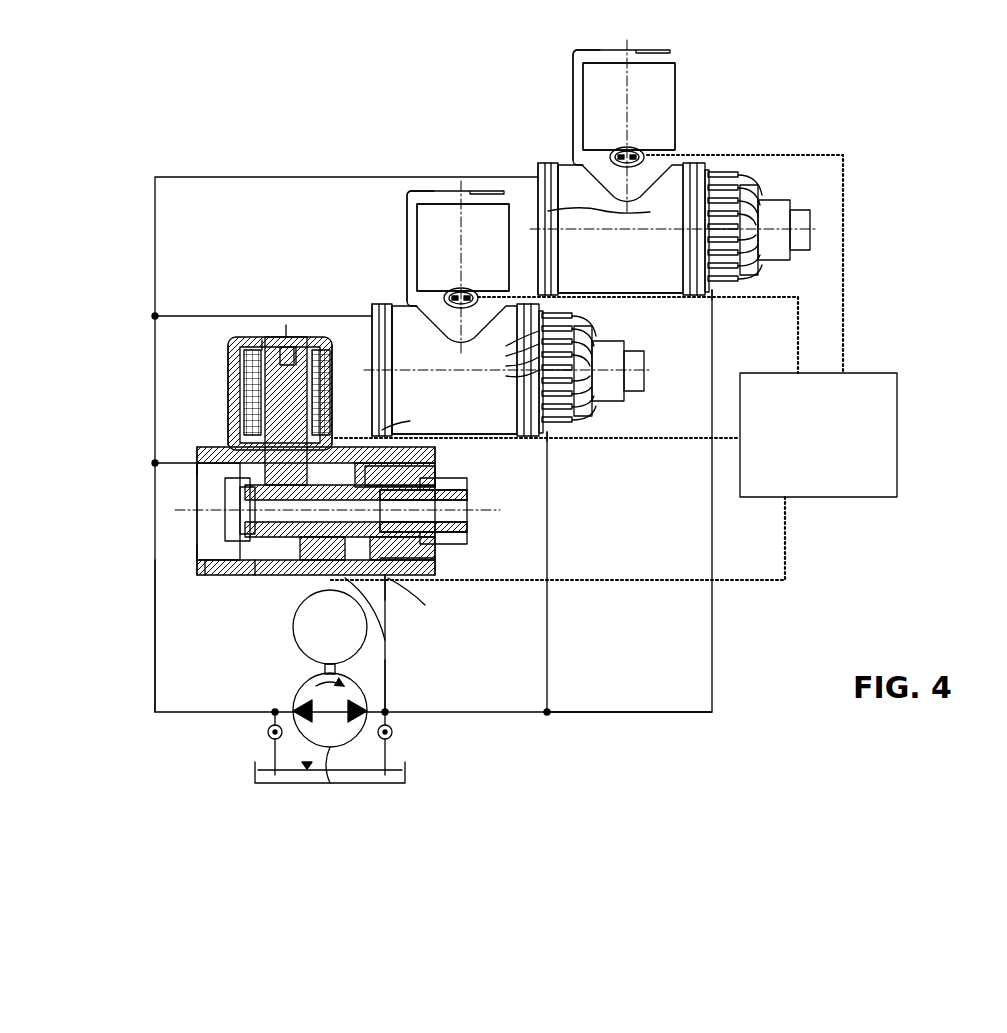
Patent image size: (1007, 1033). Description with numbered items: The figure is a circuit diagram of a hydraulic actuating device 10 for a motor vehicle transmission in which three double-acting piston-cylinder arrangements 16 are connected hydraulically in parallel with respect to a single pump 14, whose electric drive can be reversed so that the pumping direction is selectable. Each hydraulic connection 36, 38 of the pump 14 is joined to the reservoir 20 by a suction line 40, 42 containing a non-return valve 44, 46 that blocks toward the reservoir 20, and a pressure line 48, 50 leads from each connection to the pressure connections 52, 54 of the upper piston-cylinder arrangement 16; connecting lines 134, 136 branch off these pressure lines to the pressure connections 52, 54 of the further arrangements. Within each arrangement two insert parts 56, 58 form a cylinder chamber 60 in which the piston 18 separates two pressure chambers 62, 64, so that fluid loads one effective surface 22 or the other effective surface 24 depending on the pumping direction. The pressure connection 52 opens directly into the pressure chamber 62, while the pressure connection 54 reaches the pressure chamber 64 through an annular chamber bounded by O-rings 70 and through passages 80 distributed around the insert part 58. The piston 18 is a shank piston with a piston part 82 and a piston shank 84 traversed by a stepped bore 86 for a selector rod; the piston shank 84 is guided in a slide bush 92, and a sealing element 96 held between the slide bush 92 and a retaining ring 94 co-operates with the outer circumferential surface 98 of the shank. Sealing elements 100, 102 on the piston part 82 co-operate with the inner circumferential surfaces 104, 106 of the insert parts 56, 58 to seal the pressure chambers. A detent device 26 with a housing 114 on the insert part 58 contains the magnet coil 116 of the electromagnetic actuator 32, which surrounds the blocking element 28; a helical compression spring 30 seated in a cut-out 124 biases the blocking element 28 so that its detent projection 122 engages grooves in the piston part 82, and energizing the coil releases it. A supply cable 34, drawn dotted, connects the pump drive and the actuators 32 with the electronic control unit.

The hydraulic actuating device 10 is at (878, 288).
The pump 14 is at (330, 782).
The double-acting piston-cylinder arrangement 16 is at (567, 172).
The piston 18 is at (215, 510).
The reservoir 20 is at (355, 783).
The effective surface 22 is at (230, 540).
The other effective surface 24 is at (405, 552).
The detent device 26 is at (566, 108).
The blocking element 28 is at (286, 405).
The helical compression spring 30 is at (284, 345).
The electromagnetic actuator 32 is at (640, 112).
The supply cable 34 is at (843, 298).
The hydraulic connection 36 is at (296, 705).
The hydraulic connection 38 is at (385, 690).
The suction line 40 is at (268, 735).
The suction line 42 is at (392, 735).
The non-return valve 44 is at (272, 712).
The non-return valve 46 is at (388, 712).
The pressure line 48 is at (155, 620).
The pressure line 50 is at (515, 712).
The pressure connection 52 is at (540, 170).
The pressure connection 54 is at (712, 295).
The insert part 56 is at (540, 245).
The insert part 58 is at (664, 262).
The cylinder chamber 60 is at (256, 578).
The pressure chamber 62 is at (226, 493).
The pressure chamber 64 is at (331, 532).
The O-ring 70 is at (690, 216).
The passage 80 is at (627, 301).
The piston part 82 is at (340, 506).
The piston shank 84 is at (800, 206).
The stepped bore 86 is at (402, 532).
The slide bush 92 is at (440, 486).
The retaining ring 94 is at (340, 520).
The sealing element 96 is at (400, 495).
The outer circumferential surface 98 is at (460, 540).
The sealing element 100 is at (200, 548).
The sealing element 102 is at (424, 646).
The inner circumferential surface 104 is at (197, 470).
The inner circumferential surface 106 is at (429, 603).
The housing 114 is at (573, 66).
The magnet coil 116 is at (262, 342).
The detent projection 122 is at (240, 425).
The cut-out 124 is at (300, 345).
The connecting line 134 is at (184, 177).
The connecting line 136 is at (547, 640).